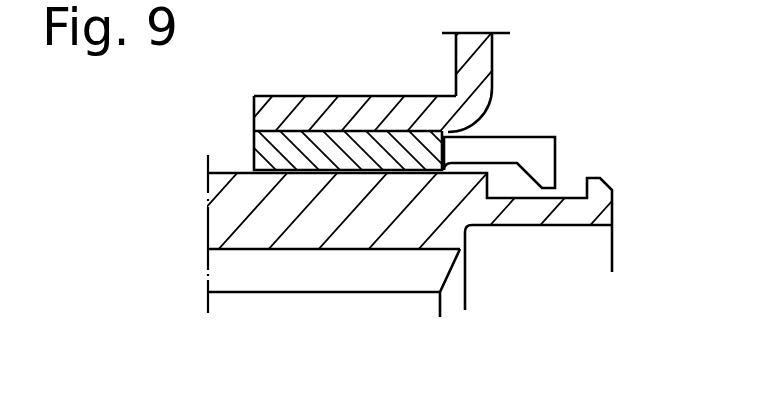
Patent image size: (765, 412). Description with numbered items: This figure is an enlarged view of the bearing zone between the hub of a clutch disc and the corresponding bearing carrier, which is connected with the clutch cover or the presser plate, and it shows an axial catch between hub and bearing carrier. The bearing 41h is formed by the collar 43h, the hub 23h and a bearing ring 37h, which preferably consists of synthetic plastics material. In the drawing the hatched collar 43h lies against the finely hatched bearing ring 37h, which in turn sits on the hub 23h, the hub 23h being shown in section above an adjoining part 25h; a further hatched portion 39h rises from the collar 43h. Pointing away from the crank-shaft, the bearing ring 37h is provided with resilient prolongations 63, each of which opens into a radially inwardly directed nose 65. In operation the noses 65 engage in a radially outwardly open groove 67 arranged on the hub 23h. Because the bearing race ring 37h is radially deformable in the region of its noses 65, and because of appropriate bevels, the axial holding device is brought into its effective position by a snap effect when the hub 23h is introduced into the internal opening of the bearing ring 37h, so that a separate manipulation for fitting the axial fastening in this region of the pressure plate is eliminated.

The hub 23h is at (258, 221).
The housing 25h is at (235, 277).
The bearing ring 37h is at (277, 141).
The flange 39h is at (477, 70).
The bearing 41h is at (230, 150).
The collar 43h is at (378, 115).
The resilient prolongations 63 is at (503, 150).
The nose 65 is at (572, 193).
The groove 67 is at (576, 168).